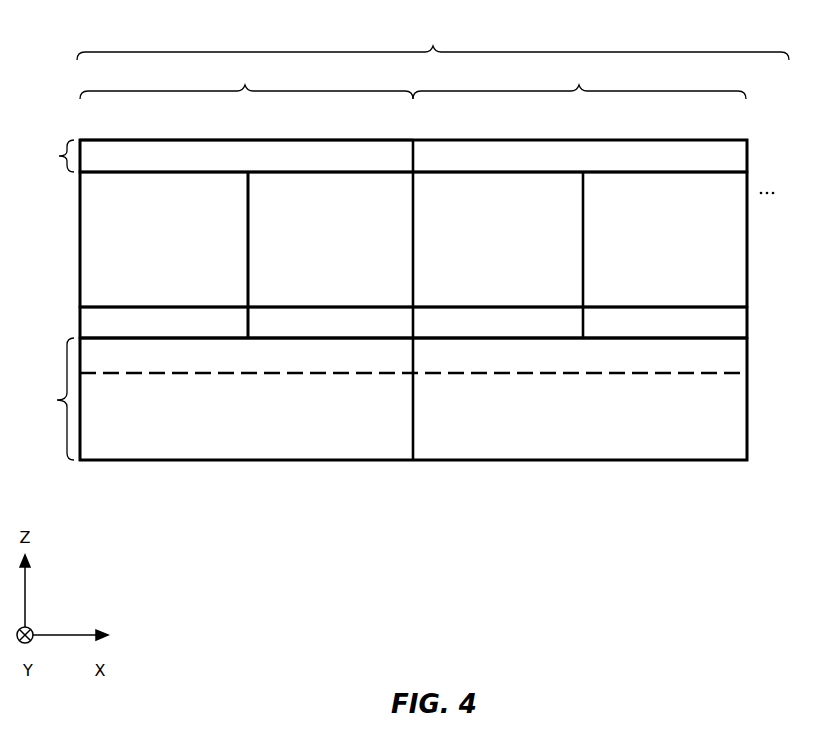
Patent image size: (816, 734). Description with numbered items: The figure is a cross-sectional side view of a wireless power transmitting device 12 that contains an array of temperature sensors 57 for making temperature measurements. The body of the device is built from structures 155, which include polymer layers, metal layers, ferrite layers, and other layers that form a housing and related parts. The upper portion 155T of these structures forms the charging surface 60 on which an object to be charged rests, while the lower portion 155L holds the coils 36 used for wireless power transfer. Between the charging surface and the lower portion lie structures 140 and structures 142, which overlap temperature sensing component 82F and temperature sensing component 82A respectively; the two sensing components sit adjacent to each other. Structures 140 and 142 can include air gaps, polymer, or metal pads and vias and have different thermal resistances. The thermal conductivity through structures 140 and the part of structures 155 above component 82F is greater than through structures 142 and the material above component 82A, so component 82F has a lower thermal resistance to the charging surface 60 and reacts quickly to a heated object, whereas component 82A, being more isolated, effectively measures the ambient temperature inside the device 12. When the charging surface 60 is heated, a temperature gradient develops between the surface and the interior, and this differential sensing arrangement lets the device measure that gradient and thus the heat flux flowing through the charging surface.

The wireless power transmitting device 12 is at (433, 43).
The temperature sensors 57 is at (413, 82).
The charging surface 60 is at (107, 139).
The upper portion 155T is at (213, 146).
The structures 155 is at (47, 300).
The structures 140 is at (88, 214).
The structures 142 is at (268, 240).
The temperature sensing component 82F is at (87, 319).
The coils 36 is at (122, 377).
The lower portion 155L is at (180, 448).
The temperature sensing component 82A is at (265, 331).